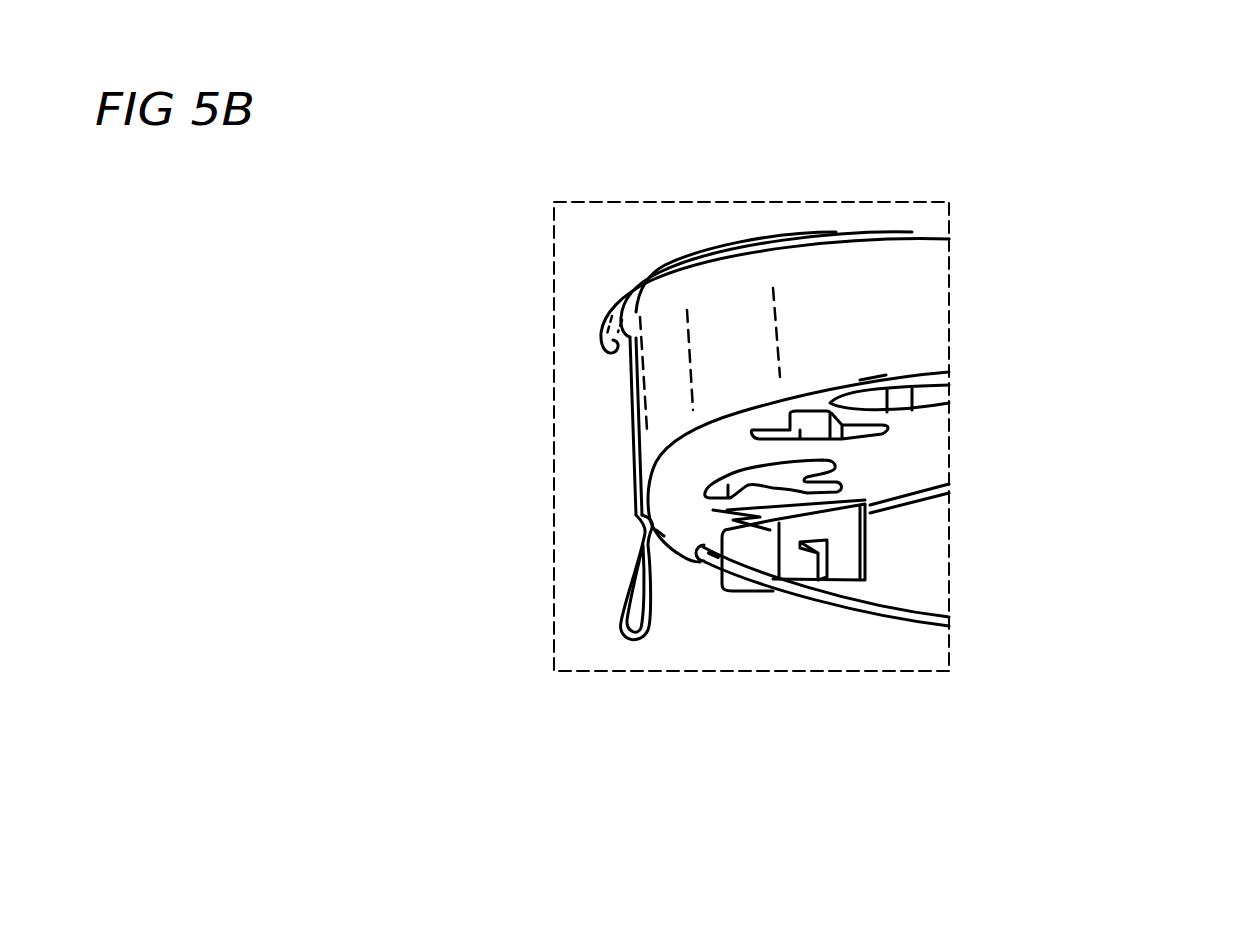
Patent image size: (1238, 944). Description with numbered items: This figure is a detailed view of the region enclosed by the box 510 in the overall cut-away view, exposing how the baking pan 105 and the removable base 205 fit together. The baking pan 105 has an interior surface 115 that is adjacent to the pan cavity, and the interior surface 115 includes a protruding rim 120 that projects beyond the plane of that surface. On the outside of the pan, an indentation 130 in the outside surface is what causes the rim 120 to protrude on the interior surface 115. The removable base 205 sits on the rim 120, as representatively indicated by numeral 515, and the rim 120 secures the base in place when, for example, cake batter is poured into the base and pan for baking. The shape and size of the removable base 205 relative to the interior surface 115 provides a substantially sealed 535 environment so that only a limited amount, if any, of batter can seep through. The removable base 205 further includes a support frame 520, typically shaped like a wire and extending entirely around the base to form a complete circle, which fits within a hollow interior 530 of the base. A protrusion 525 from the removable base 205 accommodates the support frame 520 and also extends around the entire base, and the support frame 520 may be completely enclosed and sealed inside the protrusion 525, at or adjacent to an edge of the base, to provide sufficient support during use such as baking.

The baking pan 105 is at (597, 422).
The interior surface 115 is at (928, 283).
The protruding rim 120 is at (655, 514).
The indentation 130 is at (612, 532).
The removable base 205 is at (935, 385).
The box 510 is at (553, 234).
The removable base sitting on the rim 515 is at (665, 560).
The support frame 520 is at (858, 620).
The protrusion 525 is at (700, 558).
The hollow interior 530 is at (713, 537).
The substantially sealed environment 535 is at (873, 365).